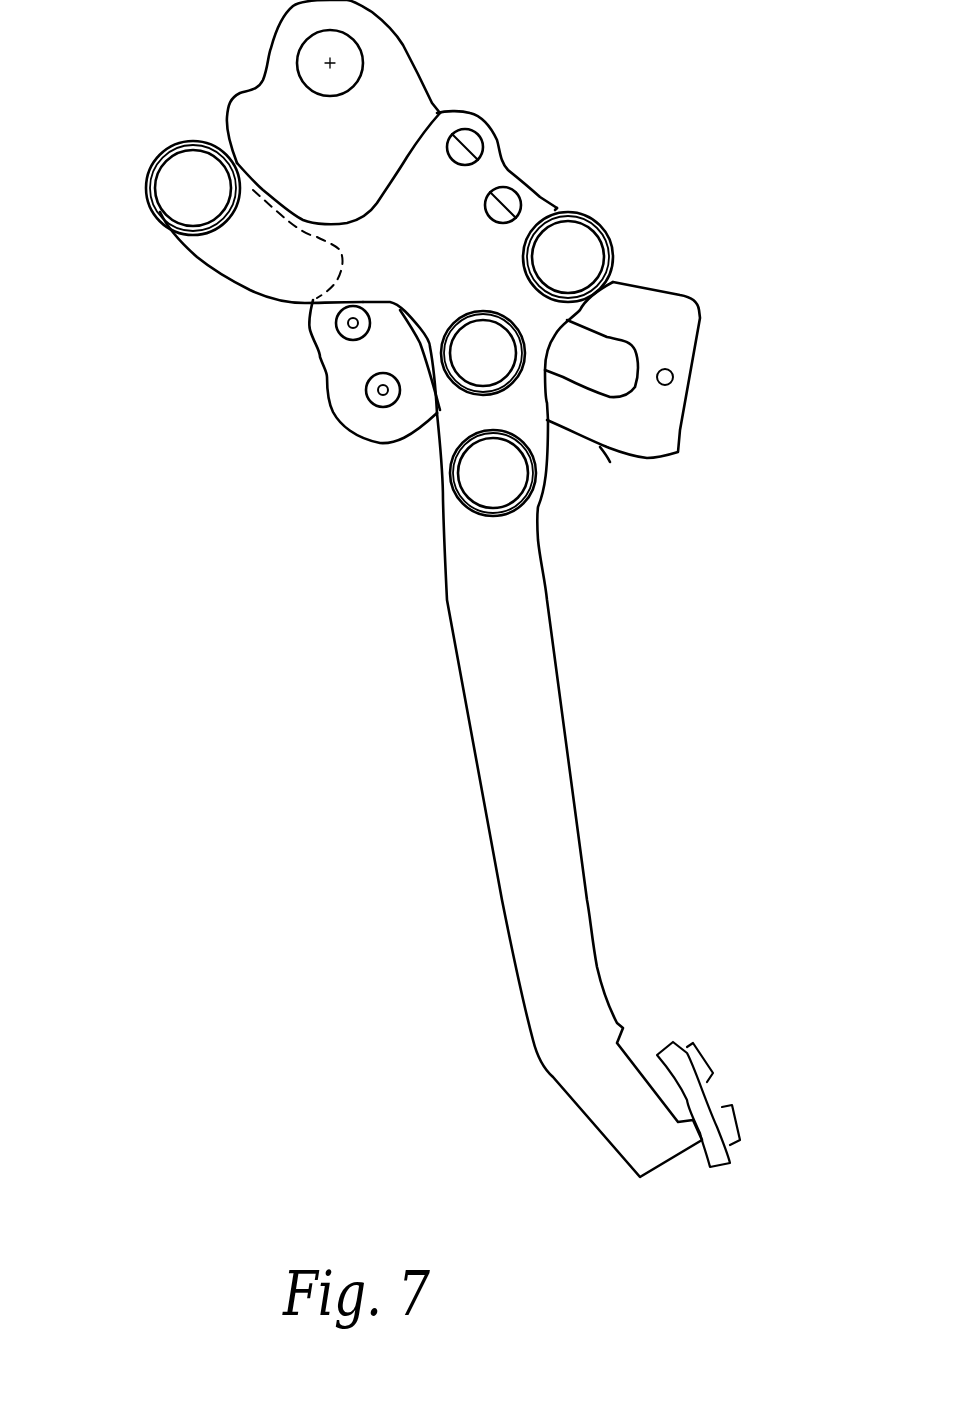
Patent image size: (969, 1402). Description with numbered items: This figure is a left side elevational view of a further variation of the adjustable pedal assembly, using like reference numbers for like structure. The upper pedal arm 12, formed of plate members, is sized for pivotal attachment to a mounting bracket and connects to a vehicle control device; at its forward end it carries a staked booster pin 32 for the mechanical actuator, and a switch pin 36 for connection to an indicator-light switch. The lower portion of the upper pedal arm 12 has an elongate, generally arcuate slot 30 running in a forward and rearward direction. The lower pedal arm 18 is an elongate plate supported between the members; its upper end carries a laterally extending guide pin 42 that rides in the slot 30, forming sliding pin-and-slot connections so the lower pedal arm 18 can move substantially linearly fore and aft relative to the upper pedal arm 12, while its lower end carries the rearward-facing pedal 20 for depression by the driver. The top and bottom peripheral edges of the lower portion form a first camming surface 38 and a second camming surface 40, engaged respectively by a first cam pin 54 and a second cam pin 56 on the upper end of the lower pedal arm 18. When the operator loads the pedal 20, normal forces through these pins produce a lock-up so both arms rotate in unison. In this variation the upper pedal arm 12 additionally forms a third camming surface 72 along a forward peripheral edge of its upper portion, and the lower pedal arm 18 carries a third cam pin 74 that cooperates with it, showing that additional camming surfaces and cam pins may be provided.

The upper pedal arm 12 is at (700, 335).
The lower pedal arm 18 is at (577, 765).
The pedal 20 is at (713, 1088).
The slot 30 is at (597, 390).
The booster pin 32 is at (340, 331).
The switch pin 36 is at (370, 403).
The first camming surface 38 is at (613, 282).
The second camming surface 40 is at (600, 447).
The guide pin 42 is at (513, 357).
The first cam pin 54 is at (593, 217).
The second cam pin 56 is at (463, 506).
The third camming surface 72 is at (310, 240).
The third cam pin 74 is at (153, 212).